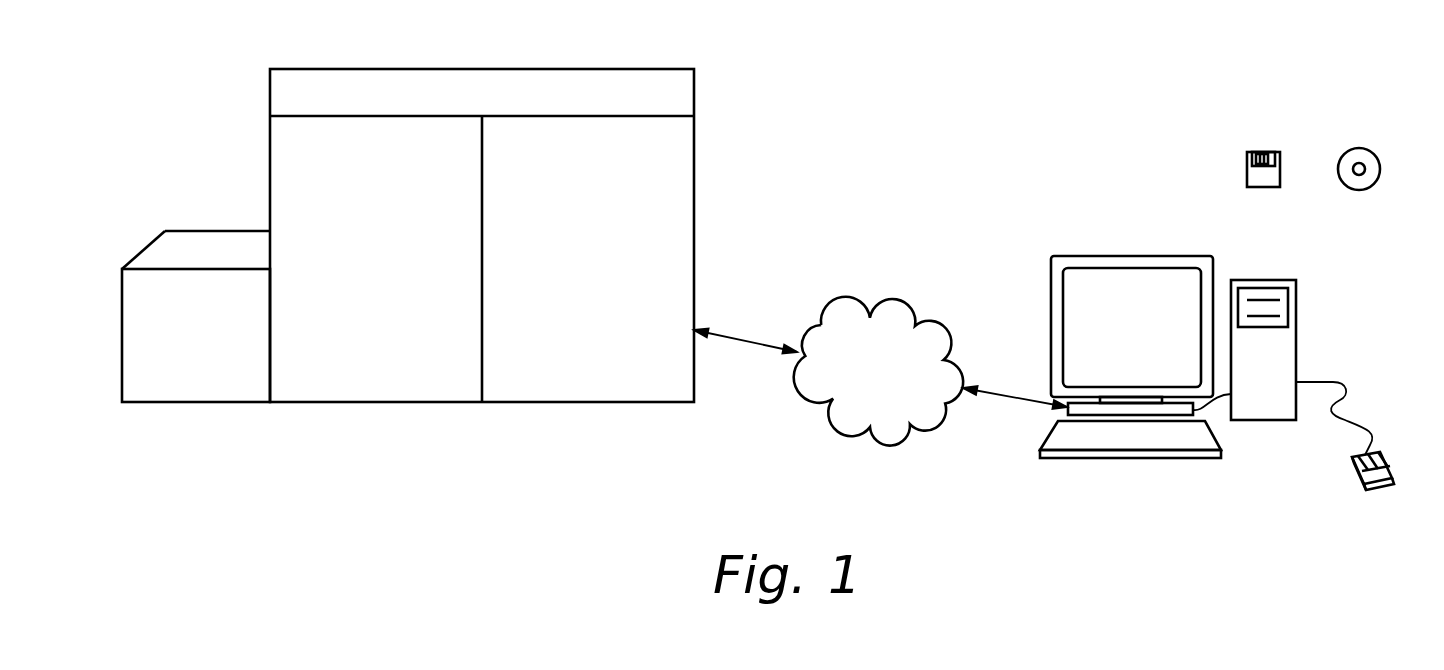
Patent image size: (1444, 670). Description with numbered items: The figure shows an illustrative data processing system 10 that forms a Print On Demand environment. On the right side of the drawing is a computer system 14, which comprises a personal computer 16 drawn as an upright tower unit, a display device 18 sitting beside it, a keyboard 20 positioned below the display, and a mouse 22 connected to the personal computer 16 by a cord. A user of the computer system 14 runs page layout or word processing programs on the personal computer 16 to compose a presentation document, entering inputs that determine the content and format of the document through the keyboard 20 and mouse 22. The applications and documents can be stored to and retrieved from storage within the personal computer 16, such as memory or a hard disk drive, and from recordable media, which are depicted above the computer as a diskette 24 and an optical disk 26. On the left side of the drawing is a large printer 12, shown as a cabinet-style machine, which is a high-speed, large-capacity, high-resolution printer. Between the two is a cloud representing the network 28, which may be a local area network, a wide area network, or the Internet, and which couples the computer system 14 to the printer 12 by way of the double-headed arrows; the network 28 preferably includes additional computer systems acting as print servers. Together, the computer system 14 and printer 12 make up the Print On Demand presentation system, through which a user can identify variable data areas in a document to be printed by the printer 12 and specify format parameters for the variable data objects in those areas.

The data processing system 10 is at (888, 198).
The printer 12 is at (695, 140).
The computer system 14 is at (1213, 505).
The personal computer 16 is at (1283, 280).
The display device 18 is at (1170, 256).
The keyboard 20 is at (1075, 458).
The mouse 22 is at (1385, 462).
The diskette 24 is at (1278, 152).
The optical disk 26 is at (1372, 152).
The network 28 is at (918, 300).